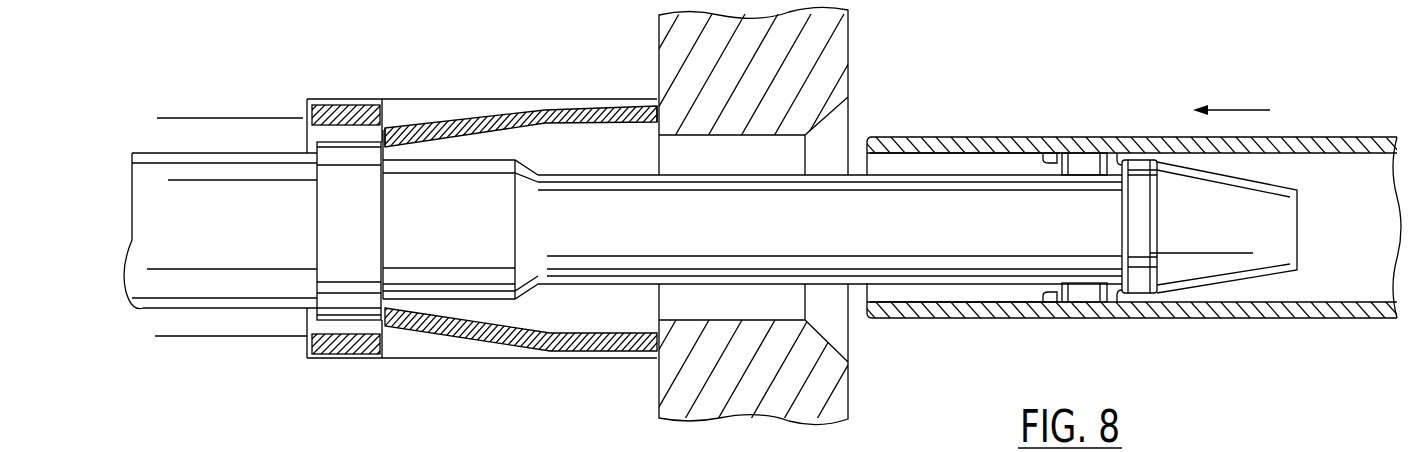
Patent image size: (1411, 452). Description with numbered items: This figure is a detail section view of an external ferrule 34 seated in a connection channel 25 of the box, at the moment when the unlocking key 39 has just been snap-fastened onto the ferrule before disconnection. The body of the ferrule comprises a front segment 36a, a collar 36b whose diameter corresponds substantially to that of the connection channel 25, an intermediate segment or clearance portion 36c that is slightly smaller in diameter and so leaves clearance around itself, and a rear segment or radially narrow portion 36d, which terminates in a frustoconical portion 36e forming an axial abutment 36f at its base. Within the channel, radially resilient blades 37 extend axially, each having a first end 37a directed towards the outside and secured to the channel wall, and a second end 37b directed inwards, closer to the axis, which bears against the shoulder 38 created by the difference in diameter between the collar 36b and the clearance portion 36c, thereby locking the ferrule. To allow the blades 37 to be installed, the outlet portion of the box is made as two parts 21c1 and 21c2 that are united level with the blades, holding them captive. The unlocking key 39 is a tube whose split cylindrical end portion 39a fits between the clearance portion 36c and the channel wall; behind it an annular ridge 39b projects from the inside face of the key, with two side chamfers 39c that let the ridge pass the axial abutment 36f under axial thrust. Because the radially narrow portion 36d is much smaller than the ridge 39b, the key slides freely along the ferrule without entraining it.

The external ferrule 34 is at (232, 142).
The front segment 36a is at (272, 182).
The collar 36b is at (320, 284).
The intermediate segment 36c is at (475, 254).
The rear segment 36d is at (663, 341).
The frustoconical portion 36e is at (1247, 200).
The axial abutment 36f is at (1153, 267).
The radially resilient blades 37 is at (485, 114).
The first end 37a is at (637, 116).
The second end 37b is at (398, 128).
The shoulder 38 is at (394, 254).
The connection channel 25 is at (545, 358).
The first part of outlet portion 21c1 is at (643, 27).
The second part of outlet portion 21c2 is at (823, 47).
The unlocking key 39 is at (972, 132).
The split cylindrical end portion 39a is at (1074, 336).
The annular ridge 39b is at (1088, 302).
The side chamfers 39c is at (1047, 150).